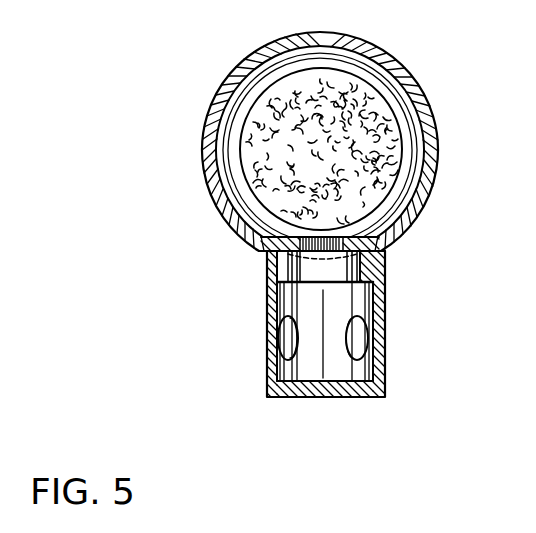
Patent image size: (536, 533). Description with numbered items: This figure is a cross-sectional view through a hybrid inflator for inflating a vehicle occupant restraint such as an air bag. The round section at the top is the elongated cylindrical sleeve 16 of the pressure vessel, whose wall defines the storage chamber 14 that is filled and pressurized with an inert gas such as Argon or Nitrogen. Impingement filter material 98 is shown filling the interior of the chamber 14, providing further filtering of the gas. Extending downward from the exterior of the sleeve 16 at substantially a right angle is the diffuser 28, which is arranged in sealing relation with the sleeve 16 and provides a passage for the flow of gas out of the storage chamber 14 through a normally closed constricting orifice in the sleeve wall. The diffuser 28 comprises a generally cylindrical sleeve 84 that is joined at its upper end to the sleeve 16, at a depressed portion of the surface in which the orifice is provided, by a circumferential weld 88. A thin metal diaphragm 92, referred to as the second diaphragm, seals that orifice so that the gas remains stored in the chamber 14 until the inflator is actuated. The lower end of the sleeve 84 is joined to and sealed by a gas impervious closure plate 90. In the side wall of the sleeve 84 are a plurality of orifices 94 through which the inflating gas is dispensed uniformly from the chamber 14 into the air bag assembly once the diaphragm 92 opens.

The storage chamber 14 is at (387, 82).
The elongated cylindrical sleeve 16 is at (216, 108).
The impingement filter material 98 is at (387, 123).
The circumferential weld 88 is at (260, 263).
The thin metal diaphragm 92 is at (272, 270).
The diffuser 28 is at (256, 326).
The generally cylindrical sleeve 84 is at (267, 378).
The orifices 94 is at (365, 311).
The gas impervious closure plate 90 is at (348, 398).